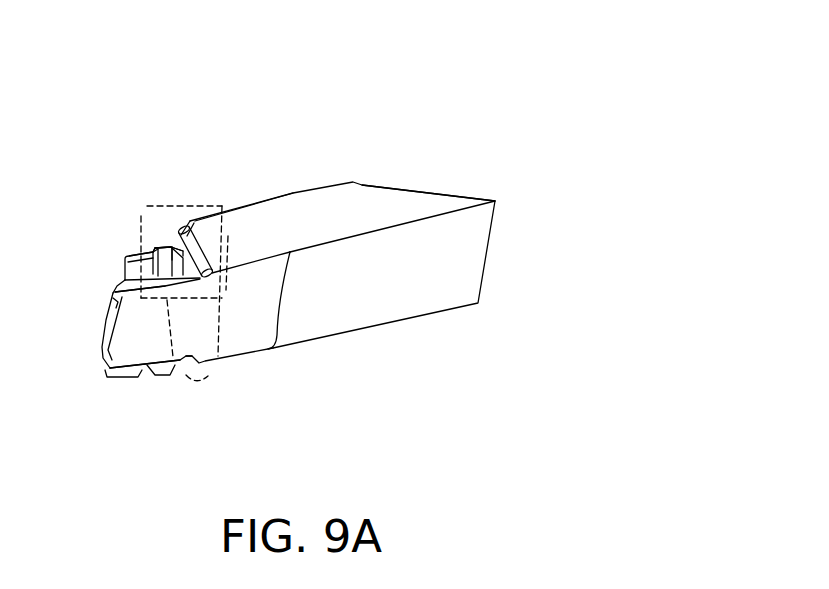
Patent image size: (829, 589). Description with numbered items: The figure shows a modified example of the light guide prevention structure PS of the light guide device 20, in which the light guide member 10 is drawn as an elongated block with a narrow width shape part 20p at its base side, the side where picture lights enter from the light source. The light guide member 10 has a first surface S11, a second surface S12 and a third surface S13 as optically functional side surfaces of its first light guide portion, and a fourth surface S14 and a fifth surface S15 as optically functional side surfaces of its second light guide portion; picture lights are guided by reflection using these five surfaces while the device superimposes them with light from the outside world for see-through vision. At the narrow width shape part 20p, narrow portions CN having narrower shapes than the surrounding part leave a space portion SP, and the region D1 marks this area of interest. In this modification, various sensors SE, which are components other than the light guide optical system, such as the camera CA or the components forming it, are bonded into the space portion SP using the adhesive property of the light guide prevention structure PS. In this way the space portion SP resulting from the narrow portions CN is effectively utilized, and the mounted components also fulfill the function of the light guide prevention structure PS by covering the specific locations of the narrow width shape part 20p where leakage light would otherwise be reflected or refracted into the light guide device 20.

The light guide member 10 is at (90, 128).
The light guide device 20 is at (117, 100).
The narrow width shape part 20p is at (187, 207).
The sensors SE is at (180, 237).
The camera CA is at (178, 181).
The region D1 is at (222, 227).
The light guide prevention structure PS is at (169, 248).
The narrow portions CN is at (155, 227).
The space portion SP is at (155, 242).
The fifth surface S15 is at (152, 250).
The third surface S13 is at (293, 193).
The second surface S12 is at (430, 187).
The first surface S11 is at (350, 285).
The fourth surface S14 is at (240, 328).